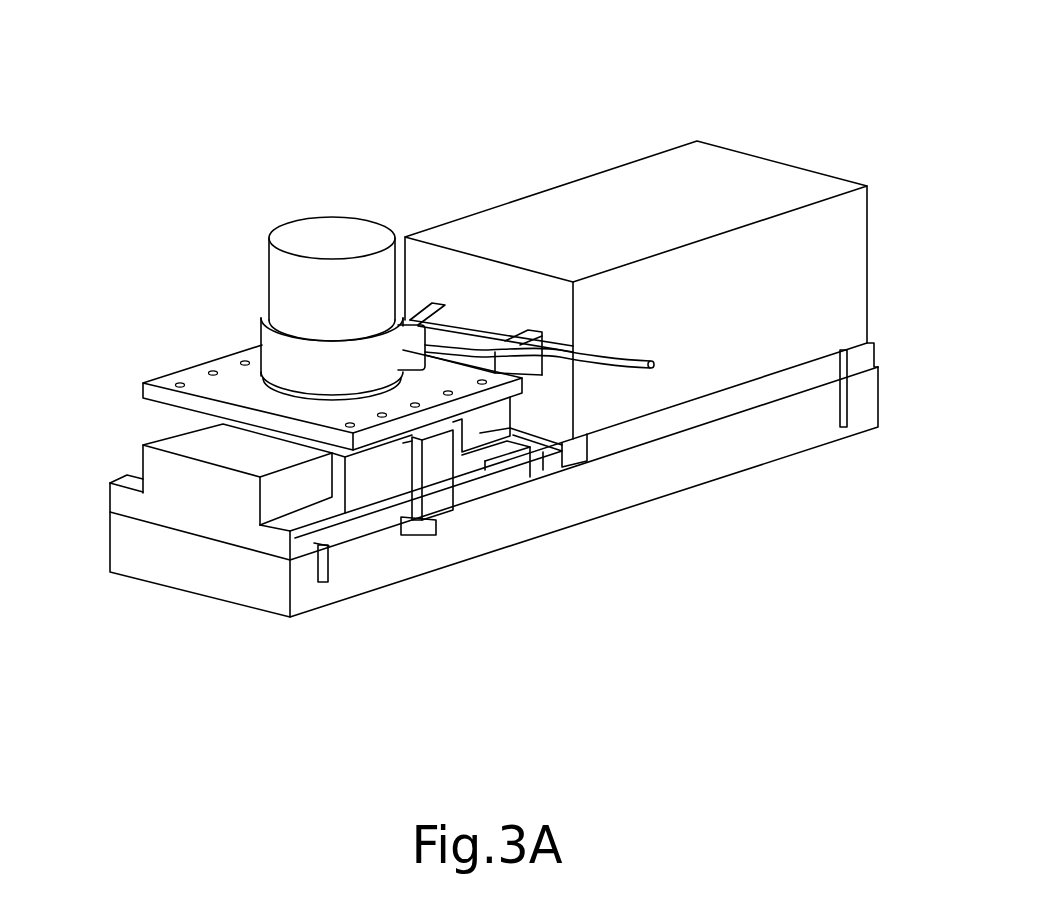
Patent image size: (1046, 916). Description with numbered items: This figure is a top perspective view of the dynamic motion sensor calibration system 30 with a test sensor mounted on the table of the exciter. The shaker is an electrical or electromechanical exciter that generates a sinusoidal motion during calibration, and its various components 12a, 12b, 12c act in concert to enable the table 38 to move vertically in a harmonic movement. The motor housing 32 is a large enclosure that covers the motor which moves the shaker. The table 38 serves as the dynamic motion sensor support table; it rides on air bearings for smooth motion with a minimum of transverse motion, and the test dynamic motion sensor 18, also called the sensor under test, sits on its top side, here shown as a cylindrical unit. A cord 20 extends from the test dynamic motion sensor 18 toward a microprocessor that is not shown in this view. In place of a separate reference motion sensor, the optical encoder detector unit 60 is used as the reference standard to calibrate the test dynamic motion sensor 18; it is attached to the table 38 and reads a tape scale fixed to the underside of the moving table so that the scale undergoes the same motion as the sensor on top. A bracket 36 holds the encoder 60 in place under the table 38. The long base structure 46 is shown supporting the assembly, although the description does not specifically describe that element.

The calibration system 30 is at (382, 142).
The motor housing 32 is at (770, 192).
The test dynamic motion sensor 18 is at (373, 220).
The cord 20 is at (560, 353).
The shaker component 12b is at (443, 332).
The table 38 is at (233, 390).
The shaker component 12a is at (158, 482).
The shaker component 12c is at (368, 517).
The optical encoder detector unit 60 is at (403, 444).
The bracket 36 is at (435, 472).
The base 46 is at (708, 465).